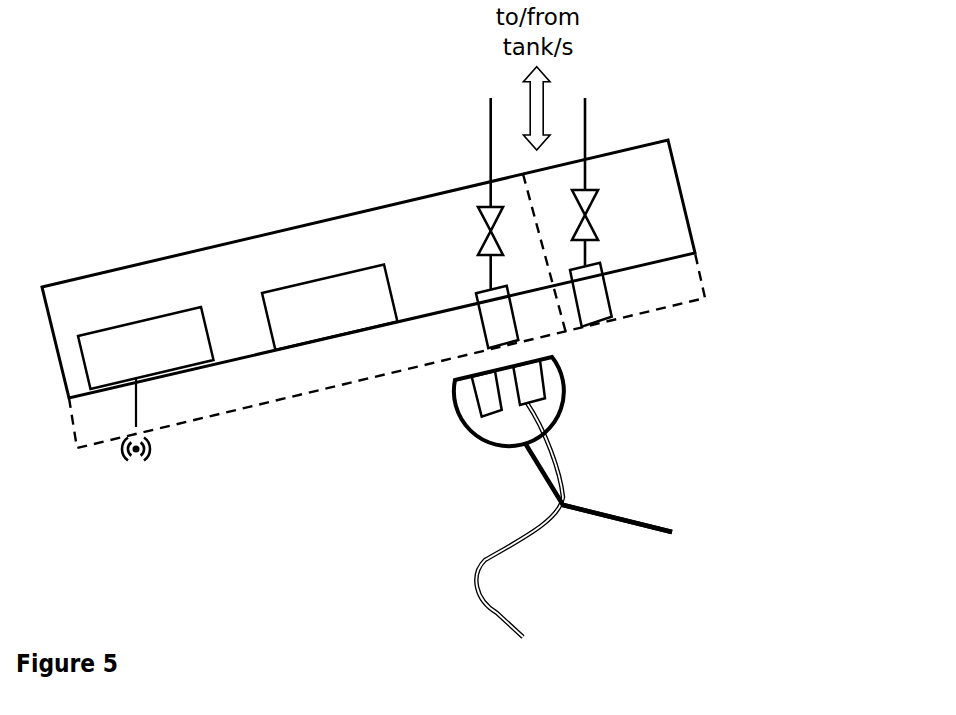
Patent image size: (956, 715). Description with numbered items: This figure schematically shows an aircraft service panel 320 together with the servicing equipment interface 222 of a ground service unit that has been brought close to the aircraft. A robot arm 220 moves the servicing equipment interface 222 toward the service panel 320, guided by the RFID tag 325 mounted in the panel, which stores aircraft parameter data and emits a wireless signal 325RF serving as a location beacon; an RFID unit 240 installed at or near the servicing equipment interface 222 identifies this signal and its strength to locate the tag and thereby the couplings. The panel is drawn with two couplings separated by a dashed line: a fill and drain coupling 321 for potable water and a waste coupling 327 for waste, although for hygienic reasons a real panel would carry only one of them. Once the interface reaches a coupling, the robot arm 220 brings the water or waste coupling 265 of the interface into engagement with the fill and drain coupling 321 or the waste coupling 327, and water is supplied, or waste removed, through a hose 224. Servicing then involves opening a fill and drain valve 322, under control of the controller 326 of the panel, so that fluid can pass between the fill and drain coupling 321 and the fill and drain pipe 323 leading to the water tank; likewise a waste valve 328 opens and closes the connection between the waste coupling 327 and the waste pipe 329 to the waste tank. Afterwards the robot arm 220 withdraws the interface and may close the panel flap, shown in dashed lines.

The aircraft service panel 320 is at (670, 148).
The fill and drain coupling 321 is at (517, 338).
The fill and drain valve 322 is at (480, 217).
The fill and drain pipe 323 is at (490, 113).
The RFID tag 325 is at (185, 372).
The wireless signal 325RF is at (136, 470).
The controller 326 is at (290, 350).
The waste coupling 327 is at (602, 315).
The waste valve 328 is at (598, 205).
The waste pipe 329 is at (585, 115).
The servicing equipment interface 222 is at (563, 417).
The hose 224 is at (567, 463).
The robot arm 220 is at (572, 512).
The RFID unit 240 is at (482, 413).
The water or waste coupling 265 is at (523, 403).